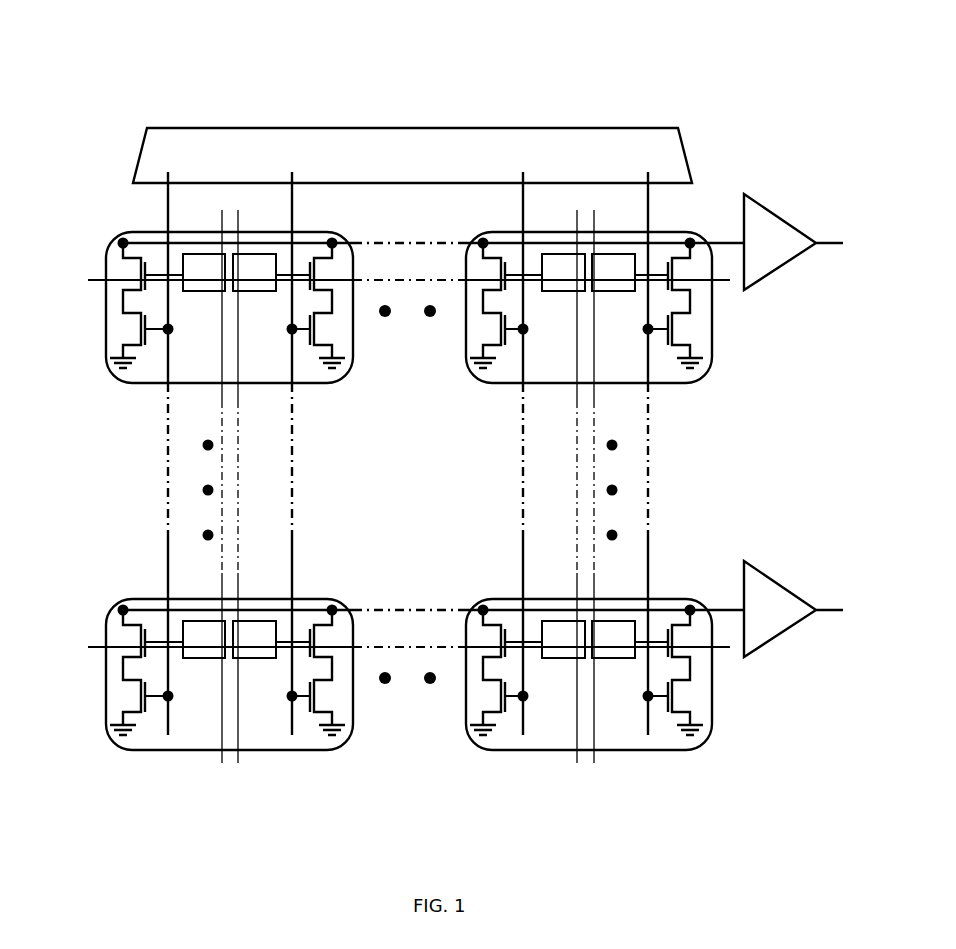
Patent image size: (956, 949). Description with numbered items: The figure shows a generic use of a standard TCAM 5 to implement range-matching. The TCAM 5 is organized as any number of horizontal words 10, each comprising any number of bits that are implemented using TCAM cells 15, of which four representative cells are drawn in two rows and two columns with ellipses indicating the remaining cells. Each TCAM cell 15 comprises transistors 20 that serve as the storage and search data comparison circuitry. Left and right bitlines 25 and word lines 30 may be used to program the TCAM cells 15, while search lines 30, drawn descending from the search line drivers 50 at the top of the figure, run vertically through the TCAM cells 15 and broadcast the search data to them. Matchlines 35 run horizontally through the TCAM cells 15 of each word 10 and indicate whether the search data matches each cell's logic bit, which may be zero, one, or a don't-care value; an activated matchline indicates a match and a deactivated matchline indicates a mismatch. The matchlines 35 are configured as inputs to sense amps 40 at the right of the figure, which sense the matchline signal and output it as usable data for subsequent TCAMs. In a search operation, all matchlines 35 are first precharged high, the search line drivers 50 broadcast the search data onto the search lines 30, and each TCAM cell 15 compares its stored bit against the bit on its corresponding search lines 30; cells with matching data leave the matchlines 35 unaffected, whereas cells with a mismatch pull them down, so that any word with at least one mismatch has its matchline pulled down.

The TCAM 5 is at (132, 42).
The horizontal words 10 is at (107, 597).
The TCAM cells 15 is at (495, 390).
The transistors 20 is at (141, 347).
The left and right bitlines 25 is at (230, 198).
The search lines 30 is at (297, 128).
The matchlines 35 is at (142, 245).
The sense amps 40 is at (793, 425).
The search line drivers 50 is at (412, 155).